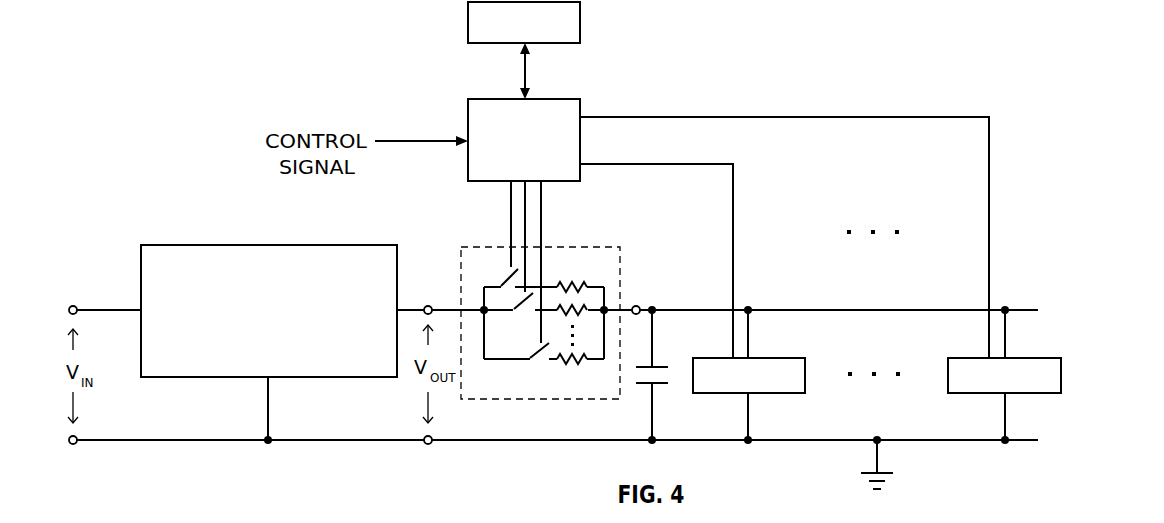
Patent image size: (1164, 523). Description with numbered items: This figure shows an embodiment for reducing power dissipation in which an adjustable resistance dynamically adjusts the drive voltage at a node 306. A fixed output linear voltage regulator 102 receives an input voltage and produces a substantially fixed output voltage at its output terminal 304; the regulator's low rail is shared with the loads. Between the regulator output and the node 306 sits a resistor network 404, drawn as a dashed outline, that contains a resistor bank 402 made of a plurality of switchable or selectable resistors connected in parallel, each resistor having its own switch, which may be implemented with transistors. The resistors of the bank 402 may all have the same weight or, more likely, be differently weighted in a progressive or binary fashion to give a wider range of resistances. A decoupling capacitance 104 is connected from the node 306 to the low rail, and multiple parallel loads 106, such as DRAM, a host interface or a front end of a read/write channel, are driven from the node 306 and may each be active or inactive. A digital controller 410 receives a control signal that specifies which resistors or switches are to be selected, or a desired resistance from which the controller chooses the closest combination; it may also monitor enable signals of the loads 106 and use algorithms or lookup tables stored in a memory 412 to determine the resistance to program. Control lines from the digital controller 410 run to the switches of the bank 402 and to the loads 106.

The fixed output linear voltage regulator 102 is at (383, 245).
The decoupling capacitance 104 is at (664, 387).
The loads 106 is at (792, 357).
The output terminal 304 is at (426, 305).
The node 306 is at (638, 304).
The resistor bank 402 is at (544, 325).
The resistor network 404 is at (608, 238).
The digital controller 410 is at (468, 100).
The memory 412 is at (468, 16).